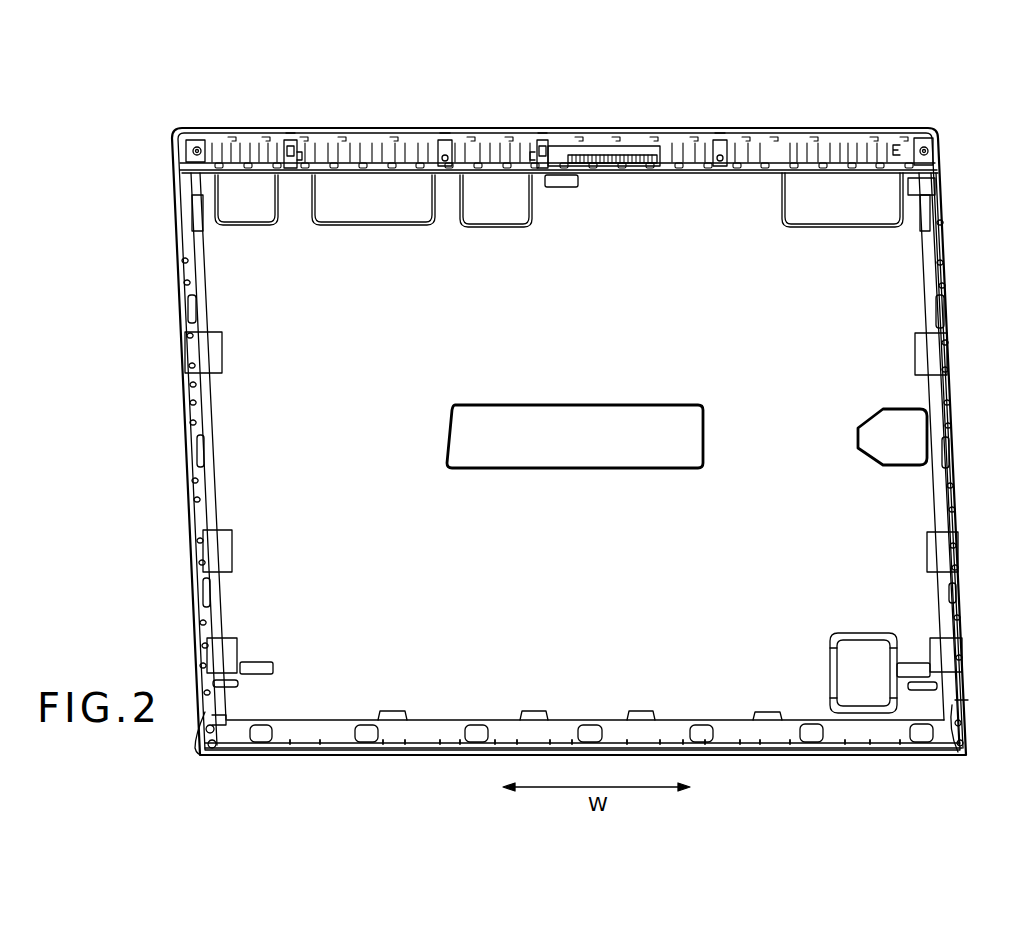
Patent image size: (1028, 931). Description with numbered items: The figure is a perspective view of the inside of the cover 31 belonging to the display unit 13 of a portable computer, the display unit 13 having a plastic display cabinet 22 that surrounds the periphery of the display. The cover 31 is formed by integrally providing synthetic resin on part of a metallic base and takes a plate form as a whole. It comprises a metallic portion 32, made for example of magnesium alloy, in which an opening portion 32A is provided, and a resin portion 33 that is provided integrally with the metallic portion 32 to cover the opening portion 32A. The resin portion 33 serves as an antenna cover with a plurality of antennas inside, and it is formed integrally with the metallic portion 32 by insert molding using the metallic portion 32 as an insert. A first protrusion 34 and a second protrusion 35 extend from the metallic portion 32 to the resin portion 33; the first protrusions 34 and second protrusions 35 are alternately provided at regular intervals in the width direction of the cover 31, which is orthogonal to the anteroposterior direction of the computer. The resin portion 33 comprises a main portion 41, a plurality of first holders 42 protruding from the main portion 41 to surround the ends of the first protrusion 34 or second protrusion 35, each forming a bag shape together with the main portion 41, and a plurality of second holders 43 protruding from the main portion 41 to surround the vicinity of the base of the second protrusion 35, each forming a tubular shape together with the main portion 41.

The display unit 13 is at (652, 100).
The display cabinet 22 is at (951, 185).
The cover 31 is at (943, 238).
The metallic portion 32 is at (912, 298).
The opening portion 32A is at (899, 136).
The resin portion 33 is at (815, 130).
The first protrusion 34 is at (447, 122).
The second protrusion 35 is at (292, 122).
The main portion 41 is at (772, 145).
The first holder 42 is at (285, 140).
The second holder 43 is at (298, 157).